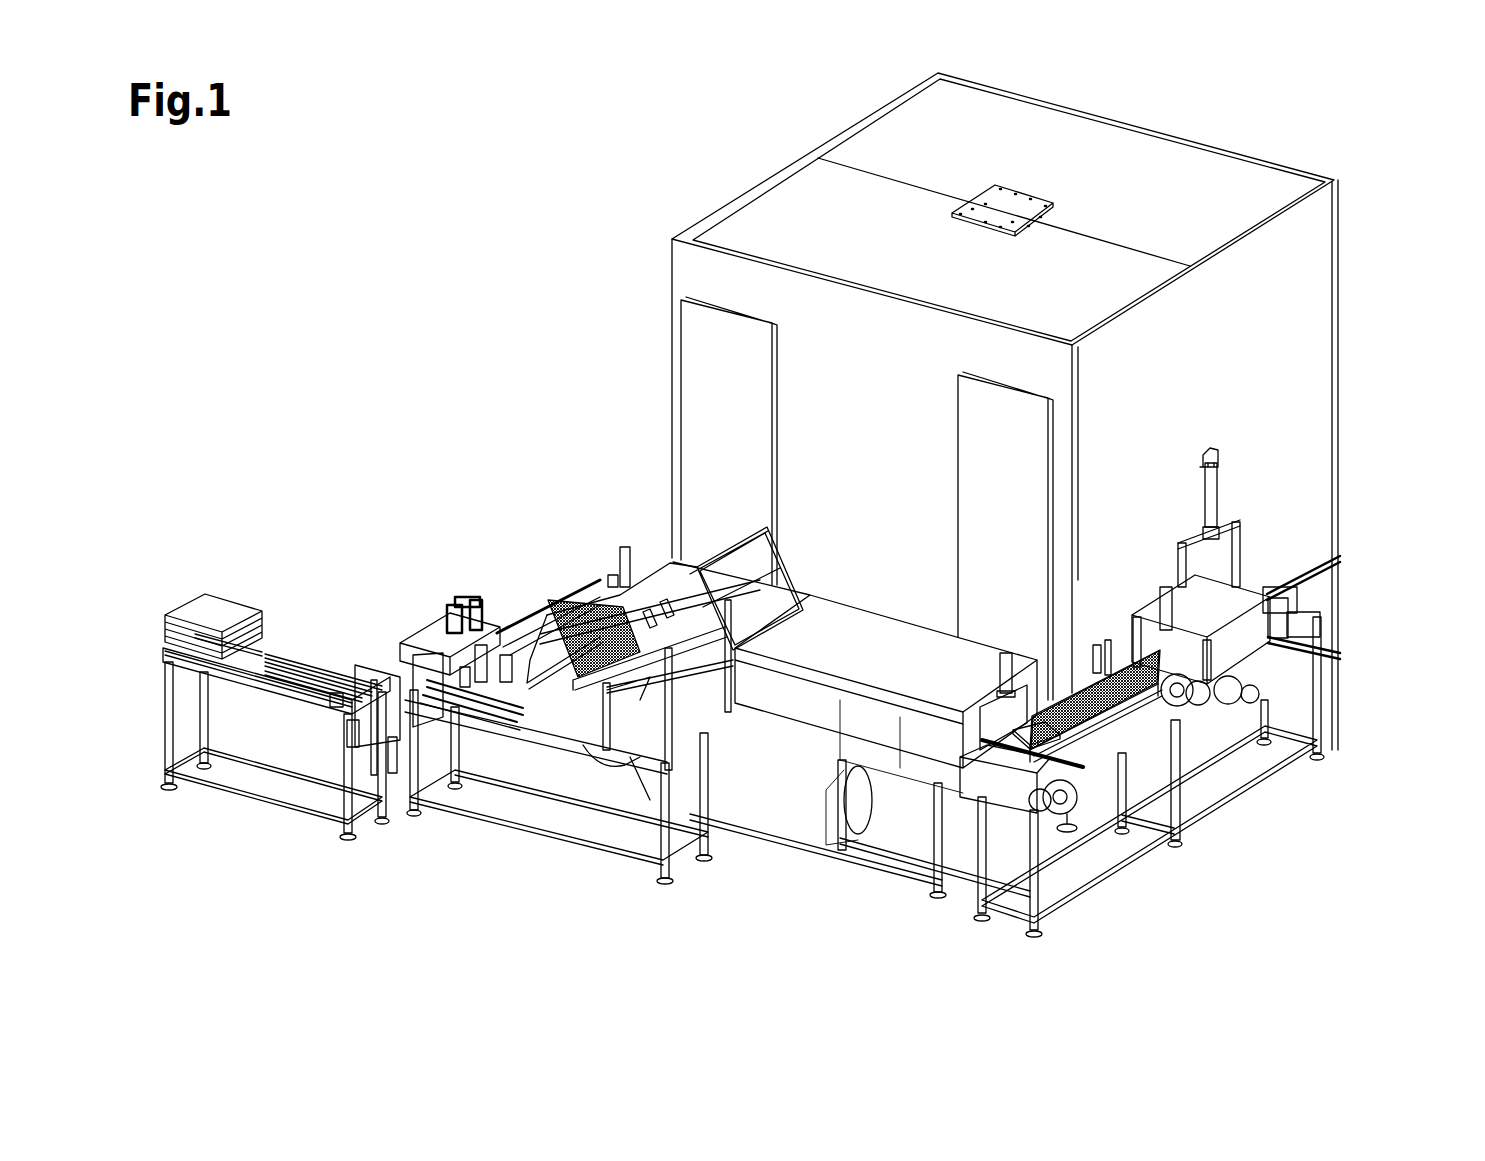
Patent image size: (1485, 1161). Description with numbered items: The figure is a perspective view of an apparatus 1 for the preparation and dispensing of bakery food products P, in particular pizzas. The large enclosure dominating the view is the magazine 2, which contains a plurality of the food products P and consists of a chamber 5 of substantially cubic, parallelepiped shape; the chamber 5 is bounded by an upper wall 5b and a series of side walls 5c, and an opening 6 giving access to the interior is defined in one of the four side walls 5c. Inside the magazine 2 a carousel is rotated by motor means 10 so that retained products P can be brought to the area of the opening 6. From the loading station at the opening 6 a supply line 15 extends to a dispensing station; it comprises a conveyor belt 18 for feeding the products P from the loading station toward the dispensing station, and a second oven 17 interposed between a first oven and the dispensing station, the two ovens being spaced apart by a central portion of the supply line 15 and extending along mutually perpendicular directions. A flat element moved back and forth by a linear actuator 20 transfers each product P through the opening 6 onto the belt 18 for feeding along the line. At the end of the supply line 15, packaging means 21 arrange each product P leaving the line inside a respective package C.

The apparatus 1 is at (420, 300).
The magazine 2 is at (1147, 110).
The chamber 5 is at (1310, 166).
The upper wall 5b is at (1200, 185).
The side walls 5c is at (710, 276).
The opening 6 is at (1212, 563).
The motor means 10 is at (1205, 618).
The supply line 15 is at (860, 880).
The second oven 17 is at (832, 697).
The conveyor belt 18 is at (1122, 683).
The linear actuator 20 is at (1330, 645).
The packaging means 21 is at (454, 576).
The package C is at (215, 608).
The food products P is at (1215, 612).